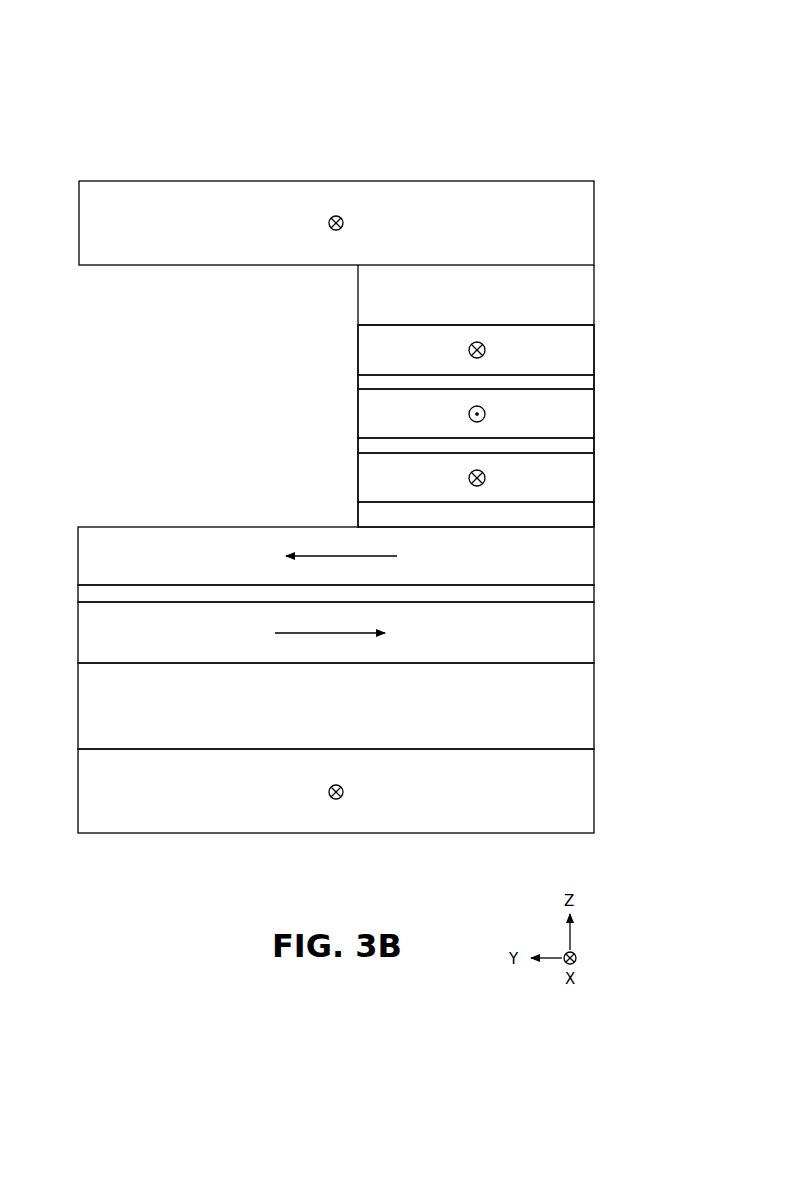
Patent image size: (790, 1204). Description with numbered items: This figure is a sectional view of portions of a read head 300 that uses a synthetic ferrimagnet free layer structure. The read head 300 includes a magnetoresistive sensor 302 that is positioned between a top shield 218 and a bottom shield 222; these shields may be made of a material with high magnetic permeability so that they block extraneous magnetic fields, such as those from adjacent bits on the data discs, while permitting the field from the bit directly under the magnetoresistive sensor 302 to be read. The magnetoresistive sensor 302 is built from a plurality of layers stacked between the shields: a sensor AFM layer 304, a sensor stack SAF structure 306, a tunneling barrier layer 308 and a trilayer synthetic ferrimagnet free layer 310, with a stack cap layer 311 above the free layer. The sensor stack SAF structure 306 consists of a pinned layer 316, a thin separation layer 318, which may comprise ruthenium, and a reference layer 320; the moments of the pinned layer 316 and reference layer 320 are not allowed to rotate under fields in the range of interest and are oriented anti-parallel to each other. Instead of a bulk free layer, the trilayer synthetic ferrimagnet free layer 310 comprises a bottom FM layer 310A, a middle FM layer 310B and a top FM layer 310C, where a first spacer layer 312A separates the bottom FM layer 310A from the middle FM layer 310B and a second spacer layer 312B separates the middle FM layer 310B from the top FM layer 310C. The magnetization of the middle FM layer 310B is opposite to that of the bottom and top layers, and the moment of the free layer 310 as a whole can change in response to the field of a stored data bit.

The read head 300 is at (660, 71).
The top shield 218 is at (460, 197).
The magnetoresistive sensor 302 is at (642, 502).
The stack cap layer 311 is at (575, 315).
The trilayer synthetic ferrimagnet free layer 310 is at (604, 325).
The top FM layer 310C is at (373, 345).
The second spacer layer 312B is at (373, 382).
The middle FM layer 310B is at (373, 410).
The first spacer layer 312A is at (373, 446).
The bottom FM layer 310A is at (373, 476).
The tunneling barrier layer 308 is at (575, 517).
The sensor stack SAF structure 306 is at (70, 527).
The reference layer 320 is at (575, 577).
The thin separation layer 318 is at (575, 599).
The pinned layer 316 is at (575, 648).
The sensor AFM layer 304 is at (575, 725).
The bottom shield 222 is at (575, 813).